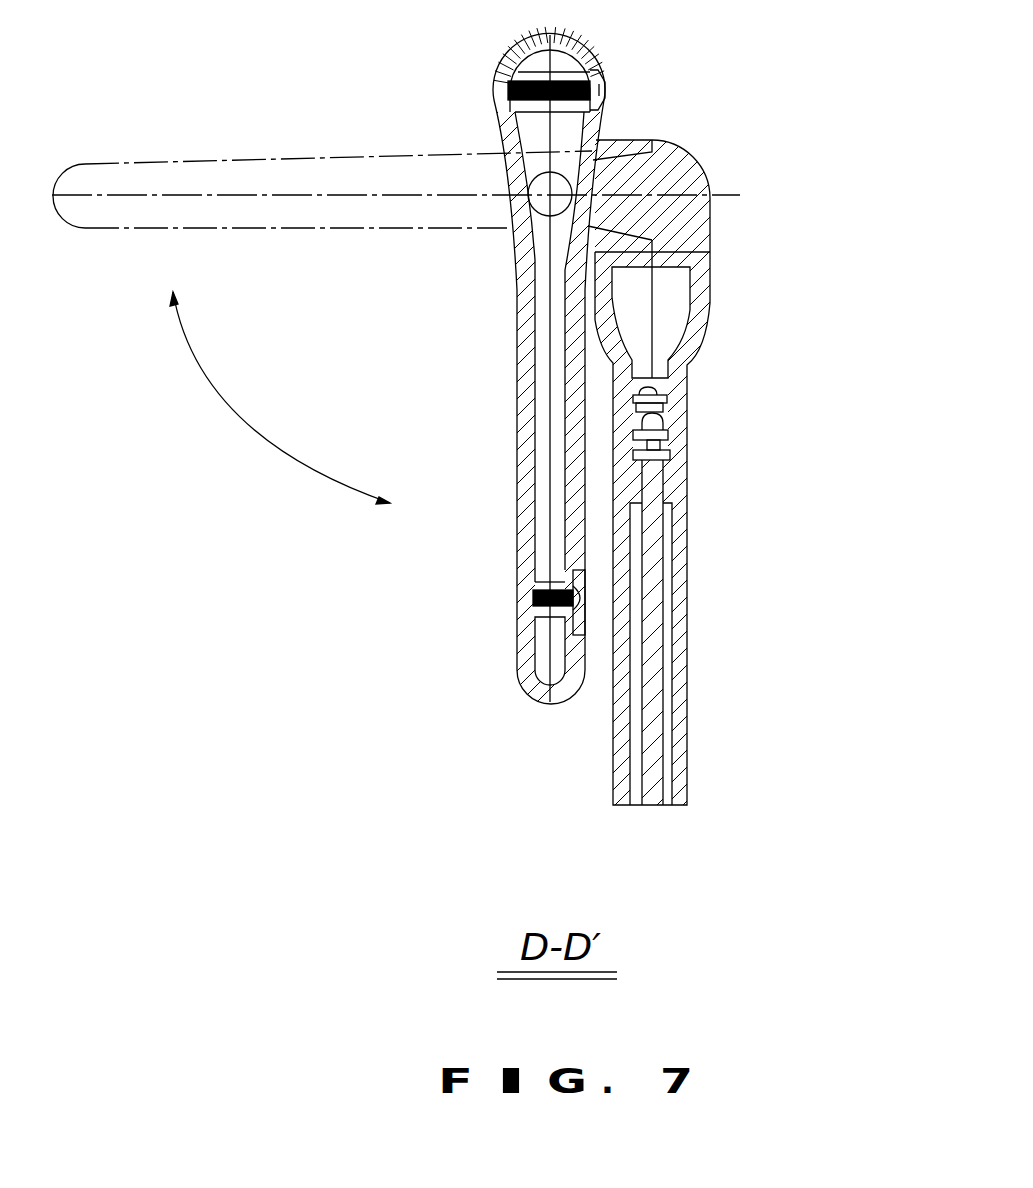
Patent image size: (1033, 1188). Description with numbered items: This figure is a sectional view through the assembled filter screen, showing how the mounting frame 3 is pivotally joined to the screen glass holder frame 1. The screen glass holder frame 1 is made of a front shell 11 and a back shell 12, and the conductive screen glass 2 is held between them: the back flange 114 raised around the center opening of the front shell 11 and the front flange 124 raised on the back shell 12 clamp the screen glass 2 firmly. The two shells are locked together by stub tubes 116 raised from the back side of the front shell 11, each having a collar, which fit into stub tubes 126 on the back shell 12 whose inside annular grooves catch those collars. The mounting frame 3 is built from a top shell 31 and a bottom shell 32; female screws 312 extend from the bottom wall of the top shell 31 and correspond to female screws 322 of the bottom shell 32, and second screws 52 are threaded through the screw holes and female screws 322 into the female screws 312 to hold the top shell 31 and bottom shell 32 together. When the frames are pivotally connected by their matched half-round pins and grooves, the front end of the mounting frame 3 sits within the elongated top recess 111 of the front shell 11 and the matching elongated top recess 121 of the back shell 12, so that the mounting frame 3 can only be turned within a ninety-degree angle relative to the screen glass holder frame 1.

The screen glass holder frame 1 is at (723, 567).
The conductive screen glass 2 is at (648, 705).
The mounting frame 3 is at (232, 147).
The front shell 11 is at (680, 617).
The back shell 12 is at (623, 753).
The top shell 31 is at (147, 170).
The bottom shell 32 is at (143, 215).
The second screws 52 is at (533, 593).
The elongated top recess 111 is at (693, 244).
The back flange 114 is at (663, 443).
The stub tubes 116 is at (653, 396).
The elongated top recess 121 is at (565, 247).
The front flange 124 is at (663, 455).
The stub tubes 126 is at (660, 418).
The female screws 312 is at (535, 613).
The female screws 322 is at (563, 615).